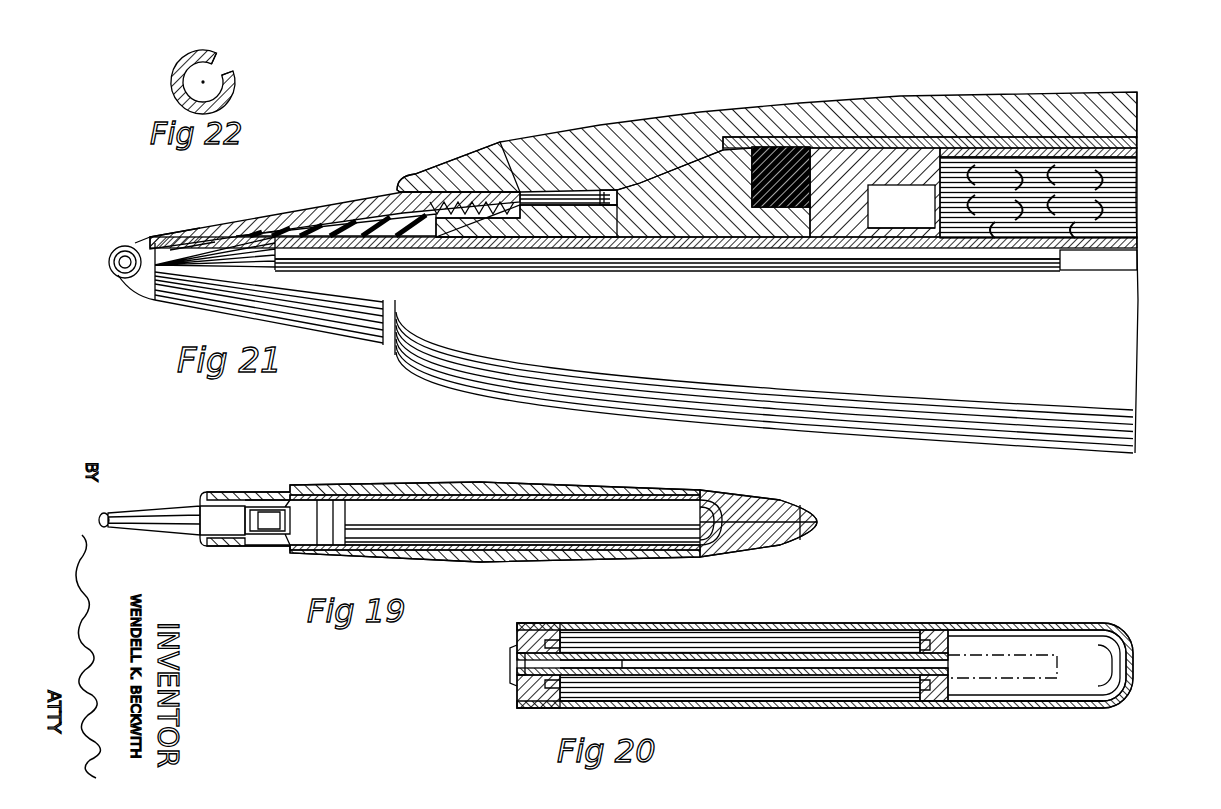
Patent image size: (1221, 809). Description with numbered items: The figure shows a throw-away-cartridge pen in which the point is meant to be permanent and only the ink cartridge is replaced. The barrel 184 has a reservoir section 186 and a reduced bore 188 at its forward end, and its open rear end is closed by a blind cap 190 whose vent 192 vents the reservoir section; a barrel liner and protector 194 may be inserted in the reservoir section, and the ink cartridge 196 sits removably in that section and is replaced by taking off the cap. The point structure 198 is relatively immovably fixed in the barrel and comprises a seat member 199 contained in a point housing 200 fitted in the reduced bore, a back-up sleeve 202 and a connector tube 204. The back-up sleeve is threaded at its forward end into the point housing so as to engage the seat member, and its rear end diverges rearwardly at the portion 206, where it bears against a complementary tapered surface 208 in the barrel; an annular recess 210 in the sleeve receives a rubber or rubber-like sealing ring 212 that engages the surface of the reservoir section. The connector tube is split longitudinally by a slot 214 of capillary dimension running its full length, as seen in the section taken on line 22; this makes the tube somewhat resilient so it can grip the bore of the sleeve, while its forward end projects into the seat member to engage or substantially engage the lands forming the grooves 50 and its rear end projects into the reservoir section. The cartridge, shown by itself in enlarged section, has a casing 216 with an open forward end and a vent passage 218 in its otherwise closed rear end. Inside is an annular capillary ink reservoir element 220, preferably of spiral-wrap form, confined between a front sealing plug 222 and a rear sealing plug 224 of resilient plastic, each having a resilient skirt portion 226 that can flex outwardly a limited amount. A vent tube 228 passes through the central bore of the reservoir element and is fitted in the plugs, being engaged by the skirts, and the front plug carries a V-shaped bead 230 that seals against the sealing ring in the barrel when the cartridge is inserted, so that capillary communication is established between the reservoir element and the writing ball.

In FIG. 21, the section line 22— 22 is at (333, 232).
In FIG. 21, the grooves 50 is at (212, 245).
In FIG. 21, the barrel 184 is at (858, 122).
In FIG. 19, the barrel 184 is at (470, 492).
In FIG. 19, the reservoir section 186 is at (382, 512).
In FIG. 21, the reduced bore 188 is at (468, 172).
In FIG. 19, the reduced bore 188 is at (260, 497).
In FIG. 19, the blind cap 190 is at (740, 500).
In FIG. 19, the vent 192 is at (806, 512).
In FIG. 21, the barrel liner and protector 194 is at (1030, 152).
In FIG. 19, the barrel liner and protector 194 is at (532, 495).
In FIG. 21, the ink cartridge 196 is at (985, 148).
In FIG. 19, the ink cartridge 196 is at (558, 515).
In FIG. 20, the ink cartridge 196 is at (875, 708).
In FIG. 19, the point structure 198 is at (256, 545).
In FIG. 21, the seat member 199 is at (238, 222).
In FIG. 21, the point housing 200 is at (303, 205).
In FIG. 21, the back-up sleeve 202 is at (585, 210).
In FIG. 22, the connector tube 204 is at (203, 58).
In FIG. 21, the connector tube 204 is at (522, 230).
In FIG. 21, the rearwardly diverging portion 206 is at (700, 175).
In FIG. 21, the tapered surface 208 is at (630, 200).
In FIG. 21, the annular recess 210 is at (772, 148).
In FIG. 21, the sealing ring 212 is at (815, 160).
In FIG. 22, the slot 214 is at (234, 66).
In FIG. 21, the slot 214 is at (566, 260).
In FIG. 21, the casing 216 is at (1065, 160).
In FIG. 20, the casing 216 is at (798, 630).
In FIG. 20, the vent passage 218 is at (1134, 669).
In FIG. 21, the capillary ink reservoir element 220 is at (1142, 208).
In FIG. 20, the capillary ink reservoir element 220 is at (728, 690).
In FIG. 21, the front sealing plug 222 is at (895, 140).
In FIG. 20, the front sealing plug 222 is at (542, 628).
In FIG. 20, the rear sealing plug 224 is at (948, 640).
In FIG. 21, the resilient skirt portion 226 is at (928, 237).
In FIG. 20, the resilient skirt portion 226 is at (555, 640).
In FIG. 21, the vent tube 228 is at (1128, 264).
In FIG. 20, the vent tube 228 is at (718, 655).
In FIG. 21, the V-shaped bead 230 is at (878, 192).
In FIG. 20, the V-shaped bead 230 is at (510, 660).